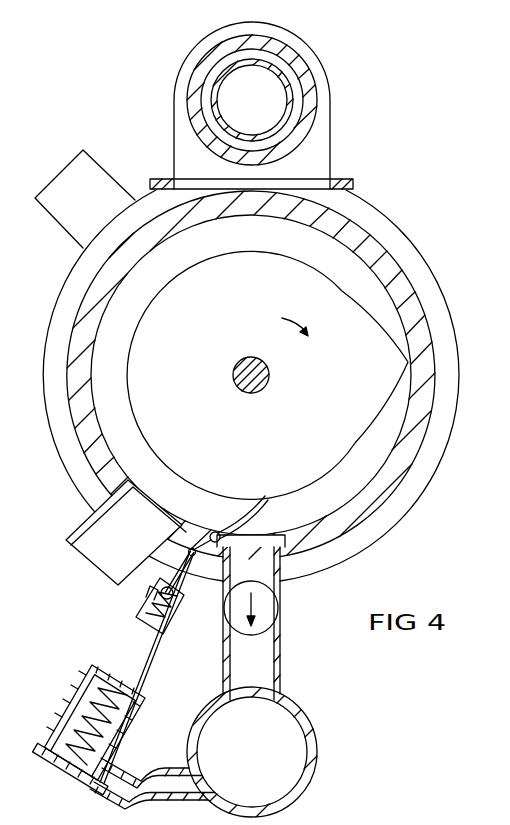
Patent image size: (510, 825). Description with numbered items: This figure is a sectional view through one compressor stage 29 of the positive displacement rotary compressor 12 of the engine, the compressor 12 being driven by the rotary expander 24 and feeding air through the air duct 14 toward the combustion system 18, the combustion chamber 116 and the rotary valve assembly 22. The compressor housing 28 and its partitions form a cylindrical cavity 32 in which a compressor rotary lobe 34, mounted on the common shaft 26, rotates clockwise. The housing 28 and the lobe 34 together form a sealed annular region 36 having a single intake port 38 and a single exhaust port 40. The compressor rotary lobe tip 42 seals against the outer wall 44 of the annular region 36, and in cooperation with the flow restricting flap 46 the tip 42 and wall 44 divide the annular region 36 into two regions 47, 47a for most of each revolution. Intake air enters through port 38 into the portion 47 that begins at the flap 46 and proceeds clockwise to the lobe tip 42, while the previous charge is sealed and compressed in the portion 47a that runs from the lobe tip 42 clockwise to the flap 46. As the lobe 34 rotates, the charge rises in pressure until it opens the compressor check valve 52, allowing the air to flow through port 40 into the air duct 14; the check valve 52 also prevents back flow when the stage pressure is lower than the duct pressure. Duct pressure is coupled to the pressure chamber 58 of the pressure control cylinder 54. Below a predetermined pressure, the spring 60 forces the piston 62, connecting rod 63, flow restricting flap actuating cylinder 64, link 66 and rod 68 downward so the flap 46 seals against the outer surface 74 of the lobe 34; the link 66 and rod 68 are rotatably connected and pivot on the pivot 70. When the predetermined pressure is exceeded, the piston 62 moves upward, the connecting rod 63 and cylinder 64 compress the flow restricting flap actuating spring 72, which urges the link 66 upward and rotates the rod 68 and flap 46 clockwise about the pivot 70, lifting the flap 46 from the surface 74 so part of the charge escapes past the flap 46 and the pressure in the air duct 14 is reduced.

The positive displacement rotary compressor 12 is at (418, 457).
The air duct 14 is at (317, 726).
The combustion system 18 is at (272, 42).
The rotary valve assembly 22 is at (330, 55).
The rotary expander 24 is at (431, 265).
The shaft 26 is at (264, 366).
The compressor housing 28 is at (437, 389).
The compressor stage 29 is at (199, 424).
The cylindrical cavity 32 is at (73, 328).
The compressor rotary lobe 34 is at (300, 270).
The annular region 36 is at (333, 222).
The intake port 38 is at (94, 574).
The exhaust port 40 is at (263, 556).
The compressor rotary lobe tip 42 is at (410, 362).
The outer wall 44 is at (392, 295).
The flow restricting flap 46 is at (260, 521).
The intake region 47 is at (138, 314).
The compression region 47a is at (368, 489).
The compressor check valve 52 is at (262, 636).
The pressure control cylinder 54 is at (78, 692).
The pressure chamber 58 is at (92, 783).
The spring 60 is at (118, 723).
The piston 62 is at (58, 766).
The connecting rod 63 is at (137, 666).
The flow restricting flap actuating cylinder 64 is at (146, 595).
The flow restricting flap actuating link 66 is at (176, 597).
The rod 68 is at (211, 534).
The pivot 70 is at (198, 550).
The flow restricting flap actuating spring 72 is at (168, 621).
The outer surface of compressor lobe 74 is at (172, 472).
The combustion chamber 116 is at (292, 98).